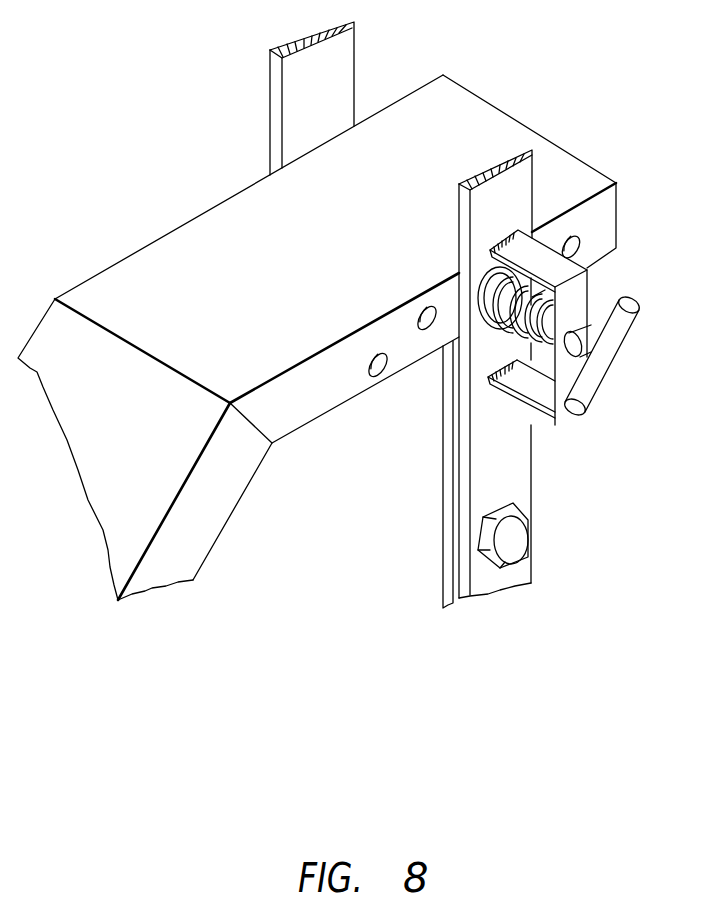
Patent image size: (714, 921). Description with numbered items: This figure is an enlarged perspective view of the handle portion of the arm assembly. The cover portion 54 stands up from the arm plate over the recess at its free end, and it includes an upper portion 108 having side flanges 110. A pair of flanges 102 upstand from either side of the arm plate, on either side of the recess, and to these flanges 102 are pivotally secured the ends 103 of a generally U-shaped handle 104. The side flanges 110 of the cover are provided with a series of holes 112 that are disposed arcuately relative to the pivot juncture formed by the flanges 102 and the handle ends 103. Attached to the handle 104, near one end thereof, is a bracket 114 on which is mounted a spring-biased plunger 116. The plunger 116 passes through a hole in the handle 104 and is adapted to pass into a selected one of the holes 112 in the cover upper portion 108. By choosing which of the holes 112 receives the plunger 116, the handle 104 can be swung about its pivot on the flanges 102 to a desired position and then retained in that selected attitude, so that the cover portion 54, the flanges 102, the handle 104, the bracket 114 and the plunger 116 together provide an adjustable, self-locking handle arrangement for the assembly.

The cover portion 54 is at (115, 280).
The flanges 102 is at (443, 515).
The handle ends 103 is at (518, 562).
The handle 104 is at (347, 47).
The upper portion 108 is at (497, 128).
The side flanges 110 is at (323, 395).
The holes 112 is at (422, 318).
The bracket 114 is at (580, 287).
The spring-biased plunger 116 is at (623, 336).